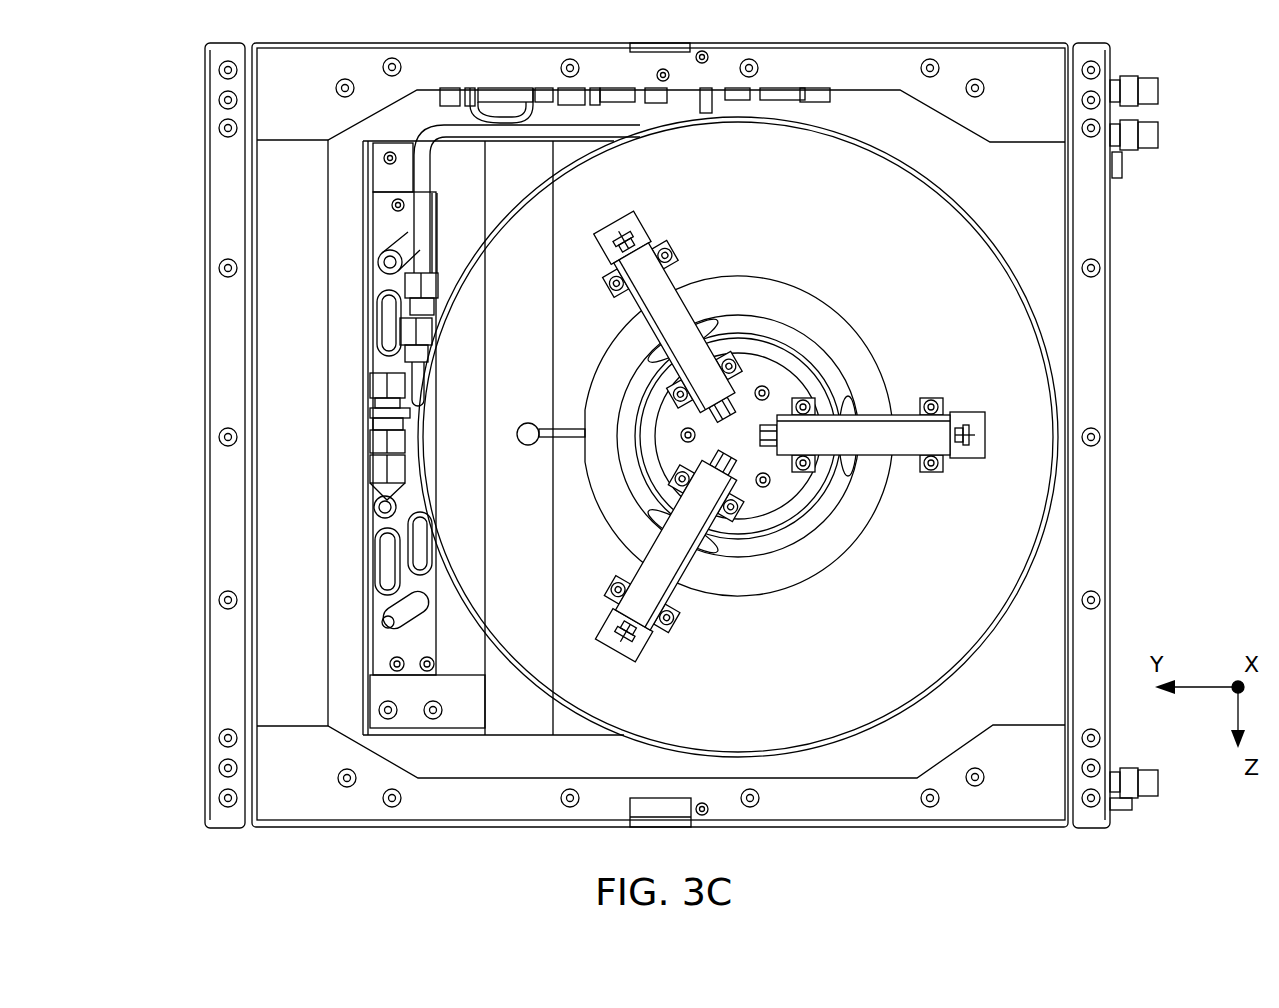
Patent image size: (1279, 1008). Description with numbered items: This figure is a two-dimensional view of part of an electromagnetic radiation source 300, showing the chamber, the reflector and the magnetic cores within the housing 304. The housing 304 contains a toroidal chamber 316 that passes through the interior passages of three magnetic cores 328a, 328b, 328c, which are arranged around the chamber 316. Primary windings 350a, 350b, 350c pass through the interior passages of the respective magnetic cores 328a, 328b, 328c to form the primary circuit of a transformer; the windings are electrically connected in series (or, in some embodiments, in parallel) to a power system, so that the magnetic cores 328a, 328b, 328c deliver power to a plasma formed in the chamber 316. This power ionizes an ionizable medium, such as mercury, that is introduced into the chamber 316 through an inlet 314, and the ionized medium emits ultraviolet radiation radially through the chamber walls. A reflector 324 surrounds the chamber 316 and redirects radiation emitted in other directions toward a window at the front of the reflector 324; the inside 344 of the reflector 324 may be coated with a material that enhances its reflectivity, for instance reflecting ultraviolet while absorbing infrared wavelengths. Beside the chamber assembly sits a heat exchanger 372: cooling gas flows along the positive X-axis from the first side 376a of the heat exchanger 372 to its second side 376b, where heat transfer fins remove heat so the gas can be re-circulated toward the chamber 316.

The electromagnetic radiation source 300 is at (140, 600).
The housing 304 is at (223, 370).
The inlet 314 is at (556, 428).
The chamber 316 is at (838, 312).
The reflector 324 is at (962, 215).
The magnetic core 328a is at (872, 457).
The magnetic core 328b is at (686, 326).
The magnetic core 328c is at (692, 548).
The inside of the reflector 344 is at (978, 628).
The primary winding 350a is at (851, 402).
The primary winding 350b is at (660, 343).
The primary winding 350c is at (661, 522).
The heat exchanger 372 is at (385, 652).
The first side of the heat exchanger 376a is at (348, 375).
The second side of the heat exchanger 376b is at (442, 622).